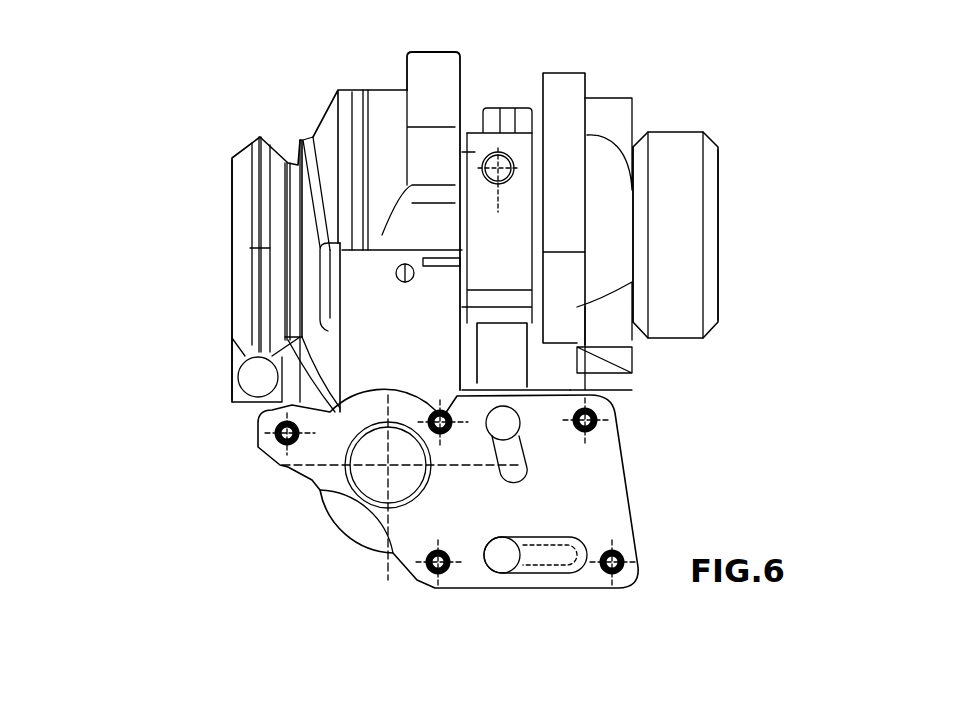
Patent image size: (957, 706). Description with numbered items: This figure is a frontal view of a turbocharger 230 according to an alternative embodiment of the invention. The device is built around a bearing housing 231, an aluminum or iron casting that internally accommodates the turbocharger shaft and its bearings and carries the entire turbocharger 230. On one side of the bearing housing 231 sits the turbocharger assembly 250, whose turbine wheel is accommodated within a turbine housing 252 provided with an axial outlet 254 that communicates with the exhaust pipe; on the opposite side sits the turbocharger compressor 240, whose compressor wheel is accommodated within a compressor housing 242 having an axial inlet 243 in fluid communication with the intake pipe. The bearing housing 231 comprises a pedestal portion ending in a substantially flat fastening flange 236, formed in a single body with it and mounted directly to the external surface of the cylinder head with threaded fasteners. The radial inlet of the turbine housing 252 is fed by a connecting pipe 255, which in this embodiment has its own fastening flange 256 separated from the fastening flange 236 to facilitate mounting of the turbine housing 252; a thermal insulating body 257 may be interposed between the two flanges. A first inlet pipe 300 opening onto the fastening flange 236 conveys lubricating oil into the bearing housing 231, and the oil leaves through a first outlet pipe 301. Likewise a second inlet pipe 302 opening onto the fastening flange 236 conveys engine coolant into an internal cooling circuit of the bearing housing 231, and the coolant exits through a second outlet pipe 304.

The turbocharger 230 is at (280, 78).
The bearing housing 231 is at (513, 233).
The fastening flange 236 is at (597, 495).
The turbocharger compressor 240 is at (735, 165).
The compressor housing 242 is at (603, 247).
The axial inlet 243 is at (720, 280).
The turbocharger assembly 250 is at (213, 172).
The turbine housing 252 is at (337, 150).
The axial outlet 254 is at (230, 240).
The connecting pipe 255 is at (372, 483).
The fastening flange 256 is at (358, 517).
The thermal insulating body 257 is at (447, 513).
The first inlet pipe 300 is at (507, 437).
The first outlet pipe 301 is at (478, 152).
The second inlet pipe 302 is at (502, 560).
The second outlet pipe 304 is at (500, 115).